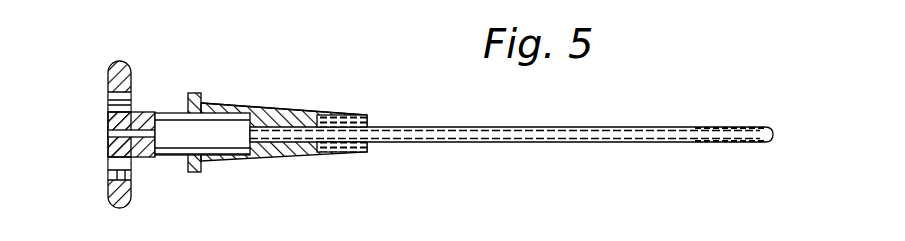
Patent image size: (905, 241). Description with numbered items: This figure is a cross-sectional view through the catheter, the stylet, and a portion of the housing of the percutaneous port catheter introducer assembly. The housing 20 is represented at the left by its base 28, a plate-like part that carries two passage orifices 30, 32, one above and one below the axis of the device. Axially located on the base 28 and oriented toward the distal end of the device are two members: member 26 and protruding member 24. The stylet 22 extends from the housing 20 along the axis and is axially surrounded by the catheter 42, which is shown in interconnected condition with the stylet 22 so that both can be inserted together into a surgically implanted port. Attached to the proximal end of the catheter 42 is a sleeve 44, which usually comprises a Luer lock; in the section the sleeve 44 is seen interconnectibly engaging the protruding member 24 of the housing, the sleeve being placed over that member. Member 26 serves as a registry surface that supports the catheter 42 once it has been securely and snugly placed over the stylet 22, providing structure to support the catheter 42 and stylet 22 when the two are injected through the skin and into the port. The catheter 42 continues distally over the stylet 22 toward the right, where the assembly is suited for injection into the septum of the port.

The housing 20 is at (439, 187).
The stylet 22 is at (312, 140).
The protruding member 24 is at (228, 150).
The member 26 is at (165, 158).
The base 28 is at (116, 60).
The passage orifice 30 is at (110, 103).
The passage orifice 32 is at (110, 165).
The catheter 42 is at (568, 126).
The sleeve 44 is at (295, 115).